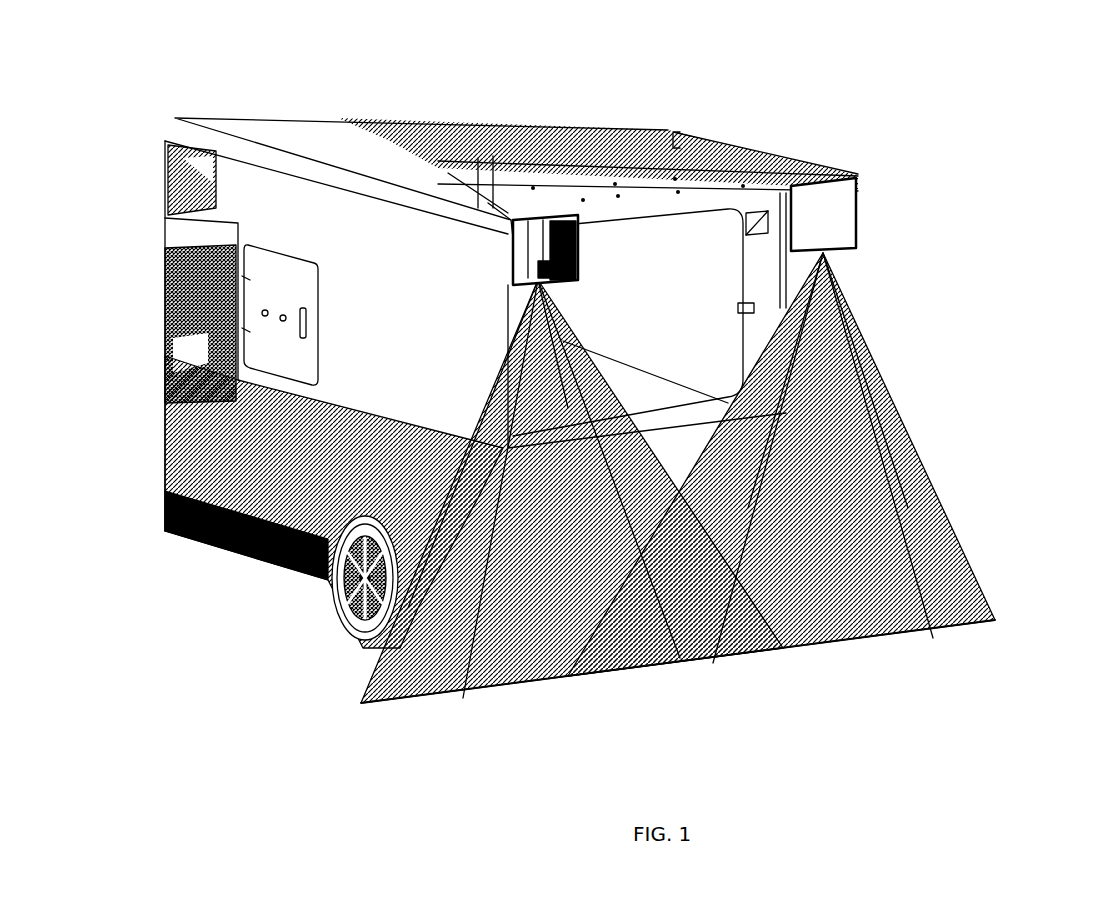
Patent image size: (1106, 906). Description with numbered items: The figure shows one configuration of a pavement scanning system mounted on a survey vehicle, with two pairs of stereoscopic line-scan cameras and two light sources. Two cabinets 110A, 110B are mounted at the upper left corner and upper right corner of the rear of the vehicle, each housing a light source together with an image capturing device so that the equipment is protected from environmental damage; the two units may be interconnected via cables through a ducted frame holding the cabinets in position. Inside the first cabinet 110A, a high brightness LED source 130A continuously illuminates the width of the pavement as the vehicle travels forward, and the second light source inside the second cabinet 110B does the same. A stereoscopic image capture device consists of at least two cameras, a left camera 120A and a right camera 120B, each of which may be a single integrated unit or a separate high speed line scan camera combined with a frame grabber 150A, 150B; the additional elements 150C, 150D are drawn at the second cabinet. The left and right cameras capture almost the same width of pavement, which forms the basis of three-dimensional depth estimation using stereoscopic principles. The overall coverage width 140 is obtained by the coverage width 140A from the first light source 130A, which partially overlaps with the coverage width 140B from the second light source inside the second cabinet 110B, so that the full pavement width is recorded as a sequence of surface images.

The cabinet 110A is at (497, 207).
The second cabinet 110B is at (845, 185).
The left camera 120A is at (503, 222).
The right camera 120B is at (532, 255).
The LED source 130A is at (567, 220).
The coverage width 140 is at (490, 686).
The coverage width 140A is at (572, 358).
The coverage width 140B is at (765, 318).
The frame grabber 150A is at (507, 260).
The frame grabber 150B is at (530, 275).
The third detection zone 150C is at (815, 260).
The fourth detection zone 150D is at (830, 300).